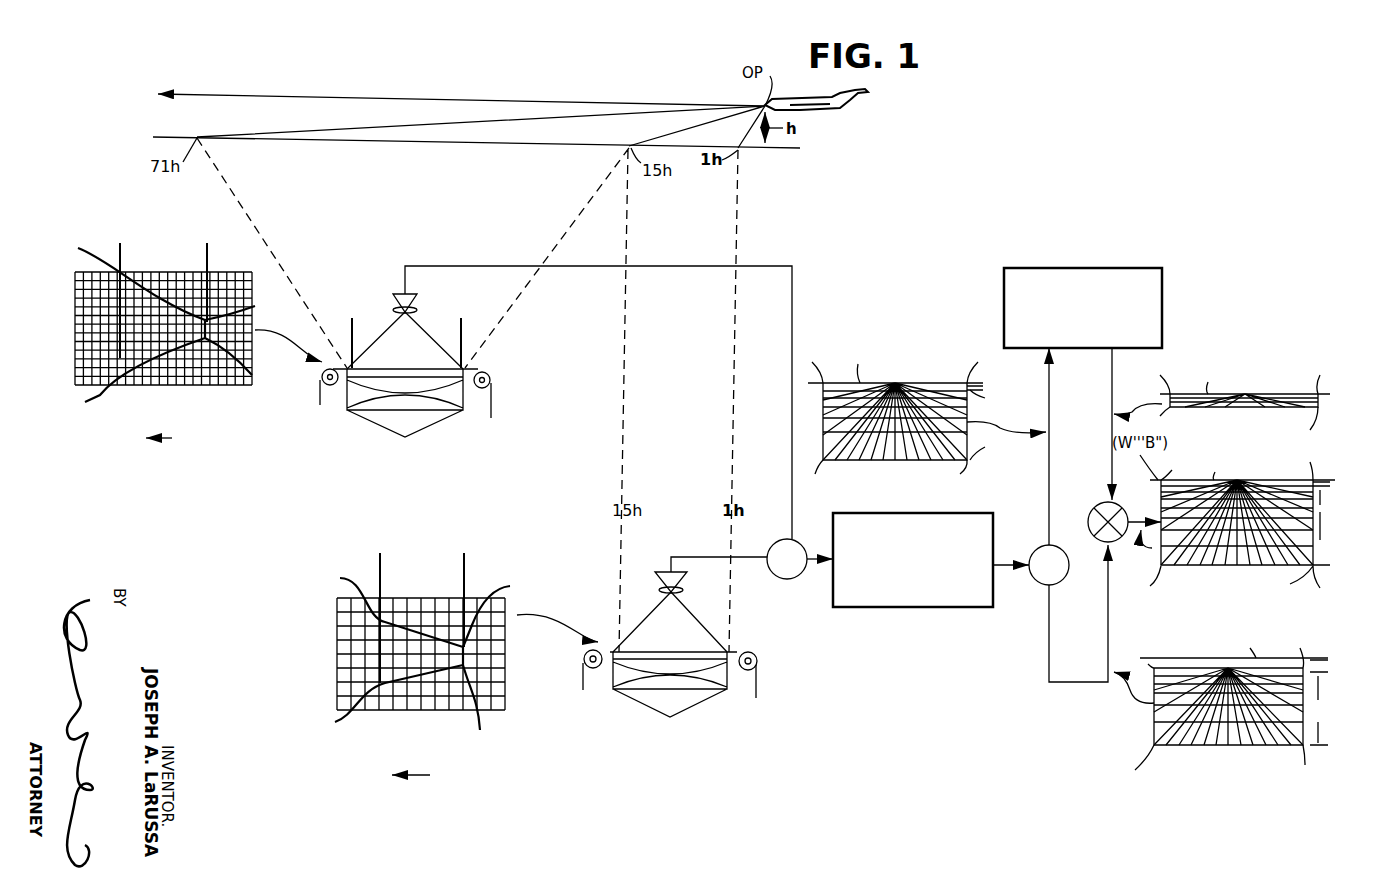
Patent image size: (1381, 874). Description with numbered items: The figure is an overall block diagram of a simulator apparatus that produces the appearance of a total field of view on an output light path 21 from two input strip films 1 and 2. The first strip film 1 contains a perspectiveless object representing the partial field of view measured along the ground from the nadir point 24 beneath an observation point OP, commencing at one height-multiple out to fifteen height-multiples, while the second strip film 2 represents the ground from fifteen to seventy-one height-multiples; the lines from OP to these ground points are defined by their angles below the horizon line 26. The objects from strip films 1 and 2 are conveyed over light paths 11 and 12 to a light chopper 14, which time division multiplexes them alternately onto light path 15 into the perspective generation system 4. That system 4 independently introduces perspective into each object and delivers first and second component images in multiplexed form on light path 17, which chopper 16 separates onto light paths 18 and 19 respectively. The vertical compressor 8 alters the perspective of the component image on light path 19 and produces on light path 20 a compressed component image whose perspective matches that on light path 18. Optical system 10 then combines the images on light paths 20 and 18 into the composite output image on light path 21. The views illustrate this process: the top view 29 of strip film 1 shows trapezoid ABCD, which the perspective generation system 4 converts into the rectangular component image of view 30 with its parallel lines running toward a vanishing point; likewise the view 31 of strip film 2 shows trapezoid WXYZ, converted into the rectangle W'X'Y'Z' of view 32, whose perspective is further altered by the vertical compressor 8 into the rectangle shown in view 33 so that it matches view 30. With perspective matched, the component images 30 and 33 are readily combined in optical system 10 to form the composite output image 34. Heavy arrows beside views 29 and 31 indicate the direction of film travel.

The first strip film 1 is at (735, 651).
The second strip film 2 is at (472, 368).
The perspective generation system 4 is at (873, 513).
The vertical compressor 8 is at (1085, 268).
The optical system 10 is at (1096, 510).
The light path 11 is at (688, 556).
The light path 12 is at (668, 268).
The light chopper 14 is at (773, 572).
The light path 15 is at (805, 571).
The chopper 16 is at (1062, 582).
The light path 17 is at (1003, 568).
The light path 18 is at (1049, 655).
The light path 19 is at (1053, 467).
The light path 20 is at (1112, 433).
The output light path 21 is at (1138, 522).
The nadir point 24 is at (766, 150).
The horizon line 26 is at (321, 94).
The top view of strip film 1 29 is at (425, 716).
The view of component image 30 is at (1214, 750).
The view of strip film 2 31 is at (170, 392).
The view of component image 32 is at (845, 362).
The view of compressed component image 33 is at (1232, 410).
The composite output image 34 is at (1235, 569).